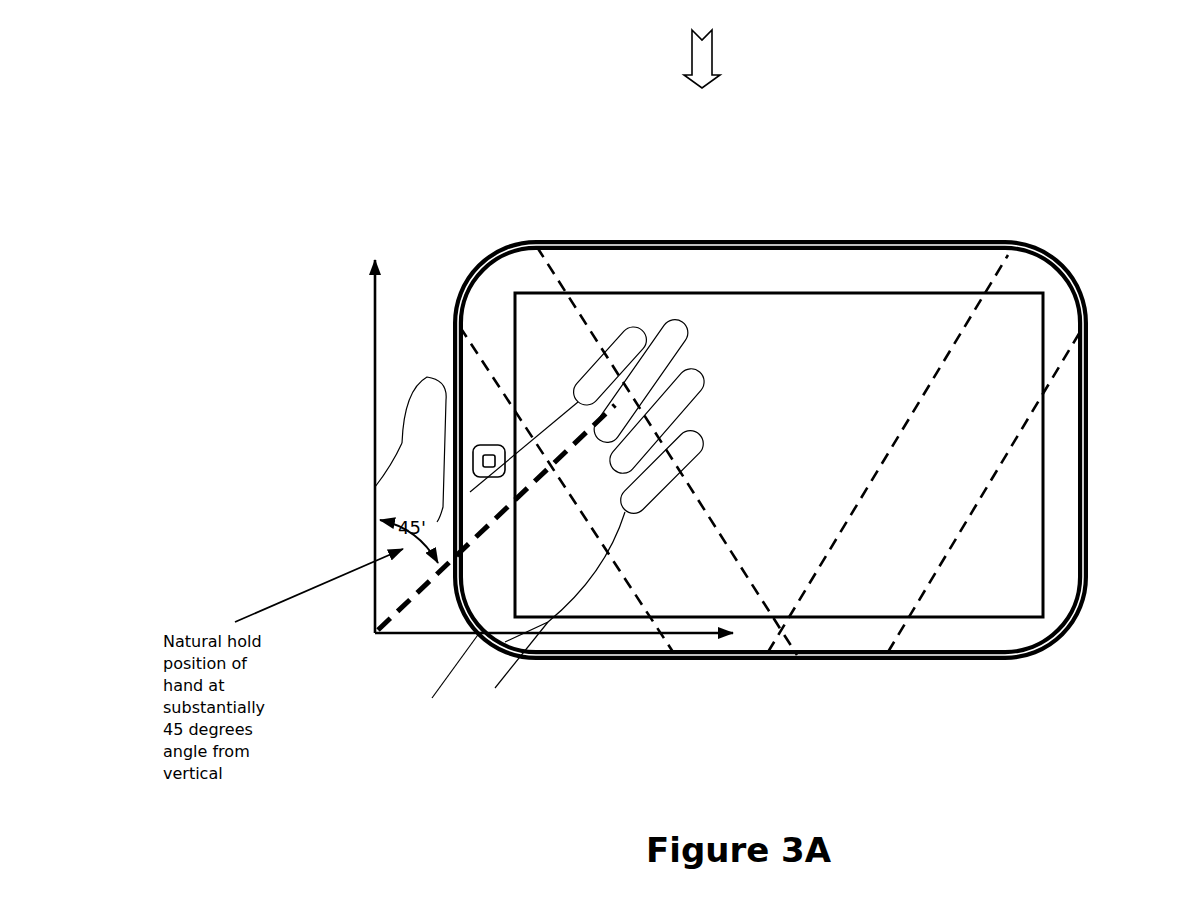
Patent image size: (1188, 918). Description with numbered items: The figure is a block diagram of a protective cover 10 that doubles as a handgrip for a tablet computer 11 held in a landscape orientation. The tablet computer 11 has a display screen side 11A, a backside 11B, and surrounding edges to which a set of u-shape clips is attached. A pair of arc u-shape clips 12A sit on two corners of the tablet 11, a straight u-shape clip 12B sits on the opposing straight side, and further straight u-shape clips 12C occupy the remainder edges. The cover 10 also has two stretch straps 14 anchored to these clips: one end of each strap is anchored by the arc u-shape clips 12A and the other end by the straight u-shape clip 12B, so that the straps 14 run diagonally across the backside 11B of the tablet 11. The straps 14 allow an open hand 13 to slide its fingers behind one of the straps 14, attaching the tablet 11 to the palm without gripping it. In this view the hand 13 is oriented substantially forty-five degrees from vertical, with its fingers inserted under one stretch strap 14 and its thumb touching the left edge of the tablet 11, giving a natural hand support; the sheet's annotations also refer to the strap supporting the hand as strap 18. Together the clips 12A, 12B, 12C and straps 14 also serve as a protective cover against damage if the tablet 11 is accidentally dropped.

The protective cover 10 is at (722, 50).
The tablet computer 11 is at (698, 253).
The display screen side 11A is at (725, 305).
The backside 11B is at (910, 453).
The arc u-shape clip 12A is at (1063, 208).
The straight u-shape clip 12B is at (758, 654).
The straight u-shape clip 12C is at (1091, 509).
The hand 13 is at (403, 460).
The stretch straps 14 is at (910, 488).
The stretch strap 18 is at (566, 489).